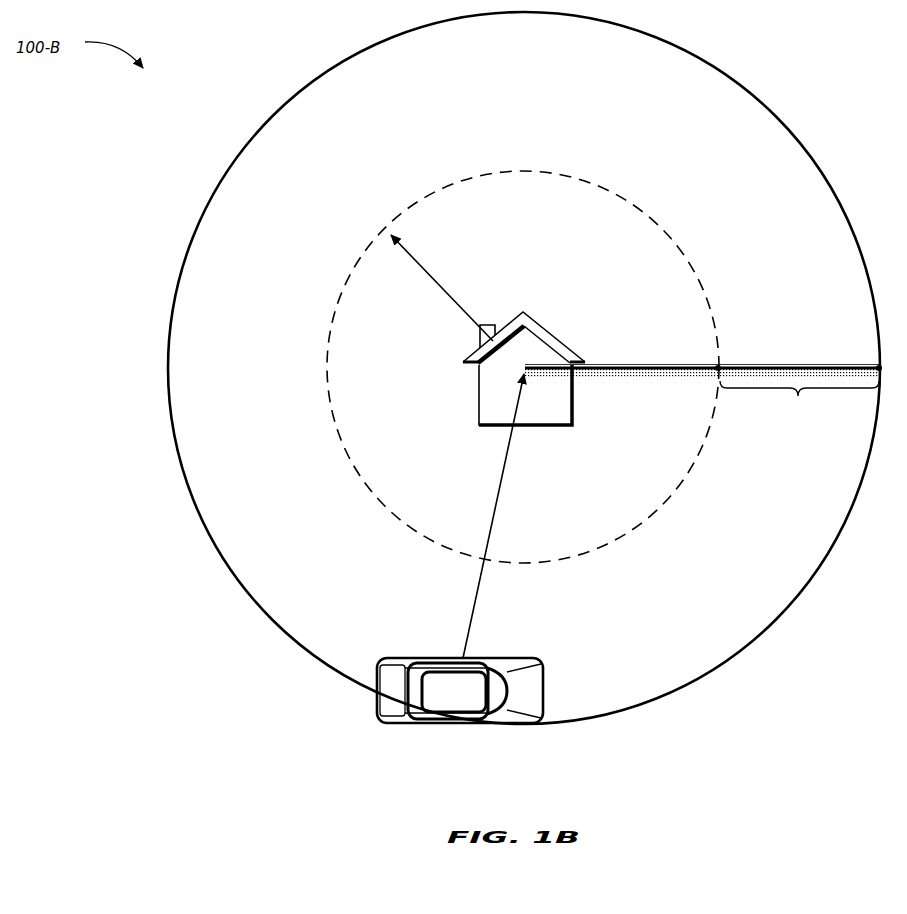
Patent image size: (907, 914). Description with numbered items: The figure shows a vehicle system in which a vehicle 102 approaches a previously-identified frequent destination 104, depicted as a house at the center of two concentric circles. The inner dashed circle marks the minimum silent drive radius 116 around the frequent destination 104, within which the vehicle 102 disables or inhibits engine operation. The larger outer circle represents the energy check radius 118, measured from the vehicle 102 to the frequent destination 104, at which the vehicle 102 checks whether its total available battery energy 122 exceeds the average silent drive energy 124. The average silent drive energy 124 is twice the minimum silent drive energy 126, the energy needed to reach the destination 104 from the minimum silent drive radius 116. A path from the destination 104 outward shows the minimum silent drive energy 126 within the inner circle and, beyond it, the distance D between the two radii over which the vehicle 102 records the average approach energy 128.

The vehicle 102 is at (460, 674).
The frequent destination 104 is at (493, 324).
The minimum silent drive radius 116 is at (434, 272).
The energy check radius 118 is at (496, 498).
The total available battery energy 122 is at (429, 660).
The average silent drive energy 124 is at (673, 328).
The minimum silent drive energy 126 is at (629, 365).
The average approach energy 128 is at (791, 365).